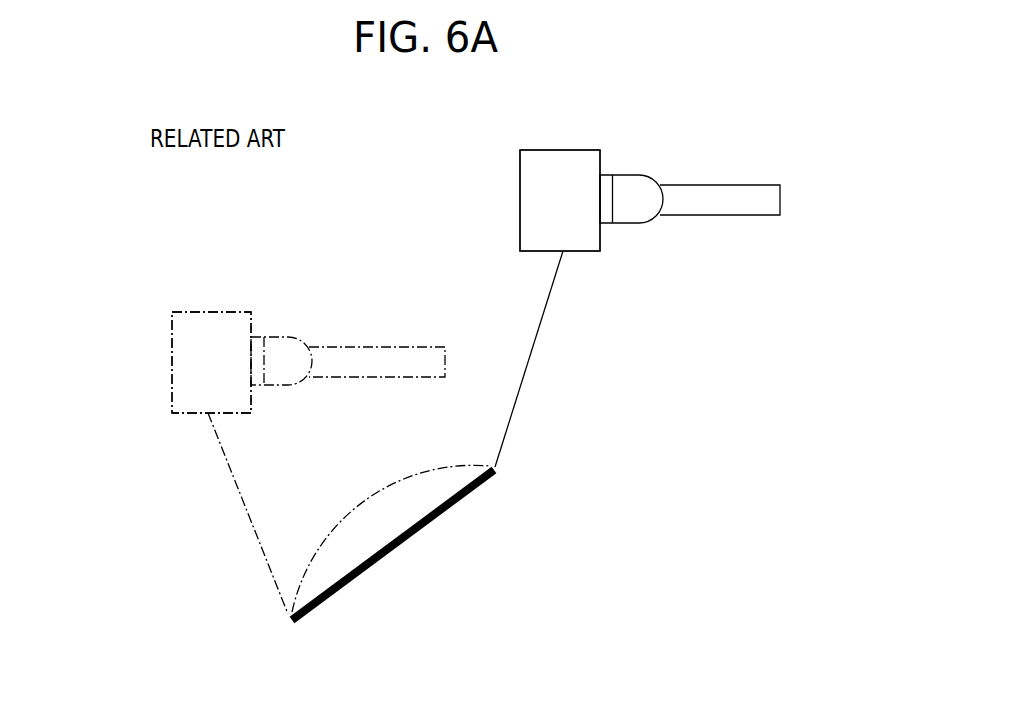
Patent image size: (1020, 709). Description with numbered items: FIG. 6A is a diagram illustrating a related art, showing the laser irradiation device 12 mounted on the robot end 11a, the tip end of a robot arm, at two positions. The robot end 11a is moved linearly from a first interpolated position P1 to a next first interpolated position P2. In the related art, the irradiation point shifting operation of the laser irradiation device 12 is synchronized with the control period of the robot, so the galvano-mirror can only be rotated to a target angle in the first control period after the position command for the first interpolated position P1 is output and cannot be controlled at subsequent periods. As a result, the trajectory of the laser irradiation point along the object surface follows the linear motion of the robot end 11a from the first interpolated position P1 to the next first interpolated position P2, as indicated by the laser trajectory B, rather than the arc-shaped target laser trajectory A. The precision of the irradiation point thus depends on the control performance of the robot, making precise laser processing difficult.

The laser irradiation device 12 is at (538, 200).
The robot end 11a is at (607, 207).
The first interpolated position P1 is at (211, 344).
The next first interpolated position P2 is at (560, 182).
The target laser trajectory A is at (447, 467).
The laser trajectory B is at (445, 513).